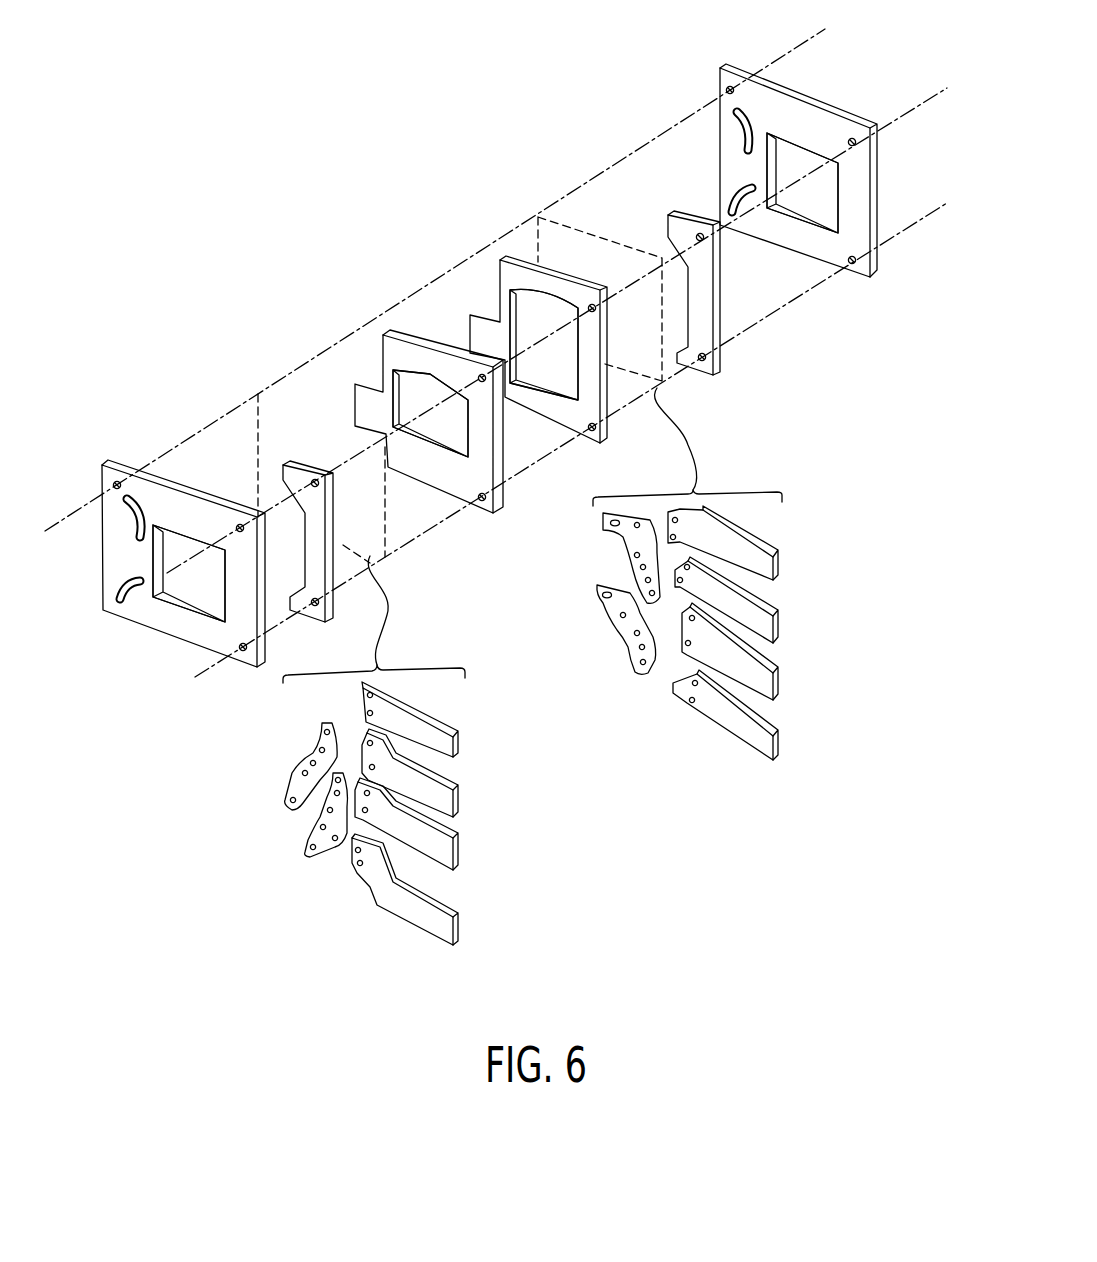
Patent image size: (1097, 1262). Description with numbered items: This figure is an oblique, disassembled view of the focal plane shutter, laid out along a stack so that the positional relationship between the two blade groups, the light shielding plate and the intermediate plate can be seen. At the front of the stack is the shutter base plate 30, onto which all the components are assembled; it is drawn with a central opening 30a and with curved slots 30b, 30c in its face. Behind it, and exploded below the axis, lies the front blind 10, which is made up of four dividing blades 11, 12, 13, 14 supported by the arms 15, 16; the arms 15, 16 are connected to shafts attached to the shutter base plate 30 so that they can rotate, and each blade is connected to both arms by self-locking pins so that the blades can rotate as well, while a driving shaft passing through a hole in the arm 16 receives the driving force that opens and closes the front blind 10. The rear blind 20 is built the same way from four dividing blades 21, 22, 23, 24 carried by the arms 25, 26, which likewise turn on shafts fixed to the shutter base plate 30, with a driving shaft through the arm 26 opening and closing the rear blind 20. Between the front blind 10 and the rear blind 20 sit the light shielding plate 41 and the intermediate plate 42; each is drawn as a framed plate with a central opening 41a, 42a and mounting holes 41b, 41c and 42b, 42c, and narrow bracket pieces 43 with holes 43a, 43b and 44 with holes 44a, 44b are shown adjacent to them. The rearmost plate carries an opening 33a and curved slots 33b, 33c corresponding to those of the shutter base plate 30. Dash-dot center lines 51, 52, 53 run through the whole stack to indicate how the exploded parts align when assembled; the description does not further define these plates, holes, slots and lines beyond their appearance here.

The front blind 10 is at (378, 776).
The dividing blade 11 is at (458, 743).
The dividing blade 12 is at (458, 803).
The dividing blade 13 is at (458, 862).
The dividing blade 14 is at (455, 938).
The arm 15 is at (290, 773).
The arm 16 is at (310, 840).
The rear blind 20 is at (699, 593).
The dividing blade 21 is at (782, 742).
The dividing blade 22 is at (782, 685).
The dividing blade 23 is at (782, 633).
The dividing blade 24 is at (782, 567).
The arm 25 is at (605, 610).
The arm 26 is at (610, 535).
The shutter base plate 30 is at (173, 563).
The opening of front plate 30a is at (185, 607).
The arcuate slot 30b is at (123, 610).
The arcuate slot 30c is at (140, 490).
The opening of rear plate 33a is at (810, 220).
The arcuate slot 33b is at (740, 195).
The arcuate slot 33c is at (733, 113).
The light shielding plate 41 is at (427, 419).
The opening of intermediate plate 41a is at (435, 443).
The mounting hole 41b is at (485, 505).
The mounting hole 41c is at (473, 367).
The intermediate plate 42 is at (527, 350).
The opening of intermediate plate 42a is at (542, 393).
The mounting hole 42b is at (593, 437).
The mounting hole 42c is at (582, 290).
The bracket plate 43 is at (279, 510).
The mounting hole 43a is at (313, 610).
The mounting hole 43b is at (320, 477).
The bracket plate 44 is at (695, 296).
The mounting hole 44a is at (722, 373).
The mounting hole 44b is at (713, 252).
The center line 51 is at (897, 236).
The center line 52 is at (890, 118).
The center line 53 is at (772, 62).